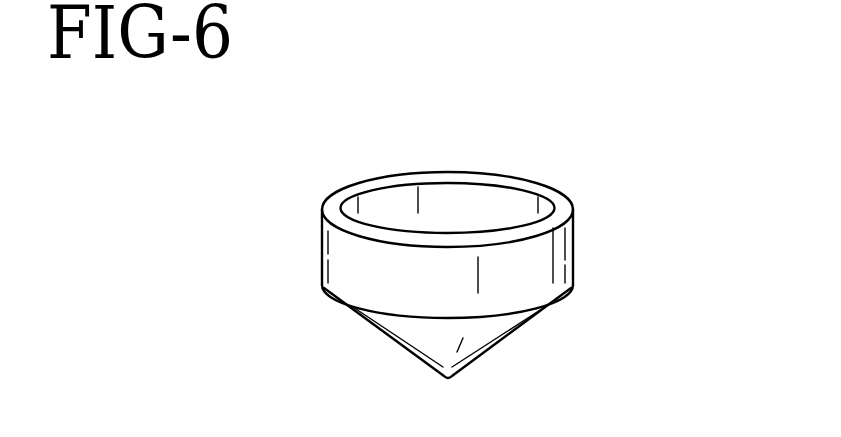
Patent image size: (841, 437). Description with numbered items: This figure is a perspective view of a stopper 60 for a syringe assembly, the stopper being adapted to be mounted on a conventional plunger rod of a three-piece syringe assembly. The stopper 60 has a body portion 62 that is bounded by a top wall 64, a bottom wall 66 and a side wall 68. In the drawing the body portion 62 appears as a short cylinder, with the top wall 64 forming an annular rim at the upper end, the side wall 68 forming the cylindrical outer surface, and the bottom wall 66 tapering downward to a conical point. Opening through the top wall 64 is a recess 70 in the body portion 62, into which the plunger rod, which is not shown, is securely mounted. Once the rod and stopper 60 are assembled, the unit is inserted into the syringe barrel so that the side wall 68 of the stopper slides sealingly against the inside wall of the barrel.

The stopper 60 is at (612, 381).
The body portion 62 is at (593, 233).
The top wall 64 is at (527, 183).
The bottom wall 66 is at (425, 363).
The side wall 68 is at (320, 276).
The recess 70 is at (453, 200).